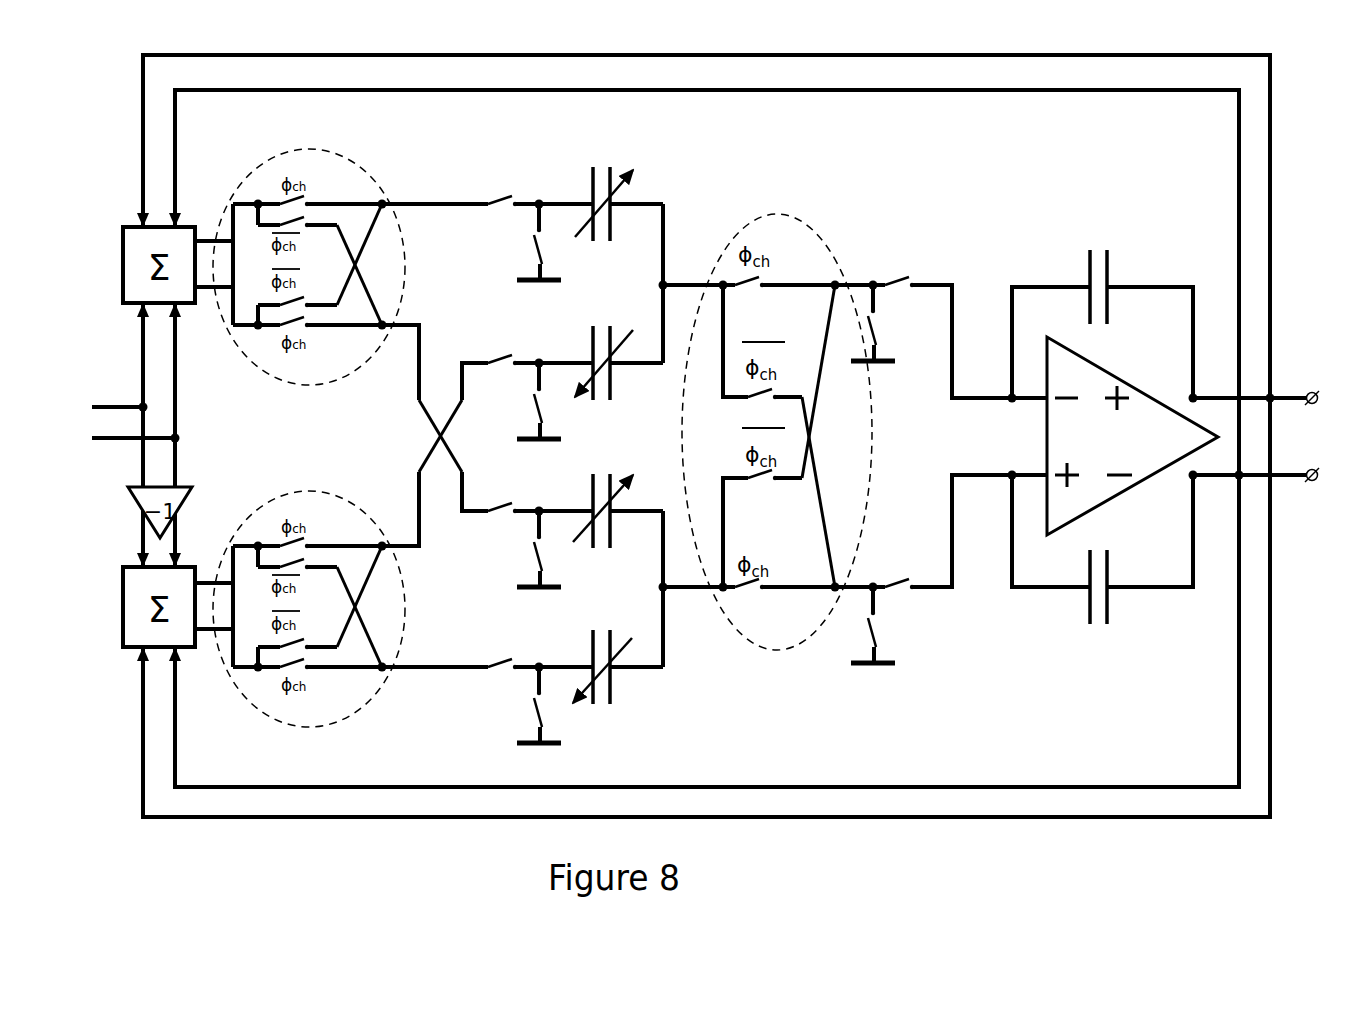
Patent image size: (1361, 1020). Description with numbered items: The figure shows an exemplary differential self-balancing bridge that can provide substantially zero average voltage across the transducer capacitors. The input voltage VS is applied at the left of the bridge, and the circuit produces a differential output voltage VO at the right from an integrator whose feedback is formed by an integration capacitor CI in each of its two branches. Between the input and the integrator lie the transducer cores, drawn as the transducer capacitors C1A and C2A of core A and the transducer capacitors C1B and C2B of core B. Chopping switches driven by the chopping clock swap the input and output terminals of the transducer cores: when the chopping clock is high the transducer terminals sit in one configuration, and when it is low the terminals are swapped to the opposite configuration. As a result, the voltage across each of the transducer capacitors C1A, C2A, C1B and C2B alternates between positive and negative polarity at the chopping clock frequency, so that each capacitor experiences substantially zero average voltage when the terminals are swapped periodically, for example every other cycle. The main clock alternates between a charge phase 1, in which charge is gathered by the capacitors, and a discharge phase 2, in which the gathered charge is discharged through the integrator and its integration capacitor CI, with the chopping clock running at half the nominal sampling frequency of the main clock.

The transducer capacitor C1A is at (604, 184).
The transducer capacitor C2A is at (604, 345).
The transducer capacitor C1B is at (603, 492).
The transducer capacitor C2B is at (602, 651).
The integrator capacitor CI is at (1102, 437).
The input voltage VS is at (114, 422).
The output voltage VO is at (1267, 436).
The charge phase 1 is at (693, 420).
The discharge phase 2 is at (714, 473).